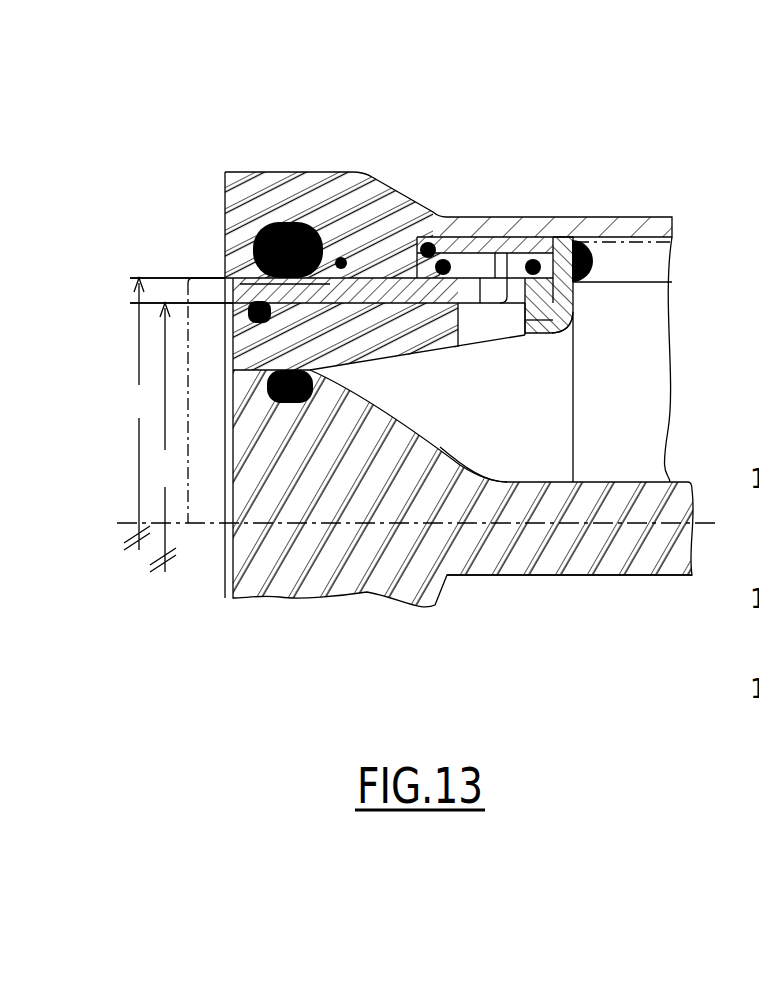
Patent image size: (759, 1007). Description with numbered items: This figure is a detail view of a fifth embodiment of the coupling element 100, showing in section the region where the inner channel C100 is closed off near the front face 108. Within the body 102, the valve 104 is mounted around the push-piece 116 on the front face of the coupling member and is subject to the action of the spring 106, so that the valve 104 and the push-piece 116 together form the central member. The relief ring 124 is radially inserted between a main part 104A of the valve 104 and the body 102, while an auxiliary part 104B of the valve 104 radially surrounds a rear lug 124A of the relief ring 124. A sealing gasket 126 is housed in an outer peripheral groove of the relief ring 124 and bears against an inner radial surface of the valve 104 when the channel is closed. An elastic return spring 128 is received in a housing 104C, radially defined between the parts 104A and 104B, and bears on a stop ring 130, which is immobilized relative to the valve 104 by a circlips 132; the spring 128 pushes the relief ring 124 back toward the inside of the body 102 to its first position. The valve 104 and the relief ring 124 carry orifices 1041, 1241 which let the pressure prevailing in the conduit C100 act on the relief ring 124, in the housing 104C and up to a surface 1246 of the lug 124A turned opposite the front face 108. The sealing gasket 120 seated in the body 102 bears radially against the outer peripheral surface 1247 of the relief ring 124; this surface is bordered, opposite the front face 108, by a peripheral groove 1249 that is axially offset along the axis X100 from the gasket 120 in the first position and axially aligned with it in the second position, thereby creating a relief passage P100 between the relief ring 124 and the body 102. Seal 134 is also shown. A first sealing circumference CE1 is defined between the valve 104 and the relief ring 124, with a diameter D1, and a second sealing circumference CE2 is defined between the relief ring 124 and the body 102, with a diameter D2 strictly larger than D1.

The female coupling element 100 is at (404, 619).
The body 102 is at (373, 262).
The valve 104 is at (563, 183).
The main part of the valve 104A is at (425, 232).
The auxiliary part of the valve 104B is at (516, 262).
The housing 104C is at (550, 250).
The spring 106 is at (633, 252).
The front face 108 is at (216, 591).
The push-piece 116 is at (628, 552).
The sealing gasket 120 is at (288, 222).
The relief ring 124 is at (397, 290).
The rear lug 124A is at (562, 240).
The sealing gasket 126 is at (285, 400).
The elastic return spring 128 is at (573, 290).
The stop ring 130 is at (447, 335).
The circlips 132 is at (443, 258).
The seal ring 134 is at (258, 308).
The orifices of the valve 1041 is at (477, 352).
The orifices of the sealing ring 1241 is at (533, 320).
The surface of the lug 1246 is at (578, 299).
The outer peripheral surface 1247 is at (305, 221).
The peripheral groove 1249 is at (342, 260).
The relief passage P100 is at (417, 367).
The inner channel C100 is at (500, 458).
The axis X100 is at (540, 535).
The first sealing circumference CE1 is at (164, 313).
The second sealing circumference CE2 is at (160, 274).
The diameter D1 is at (163, 437).
The diameter D2 is at (136, 414).